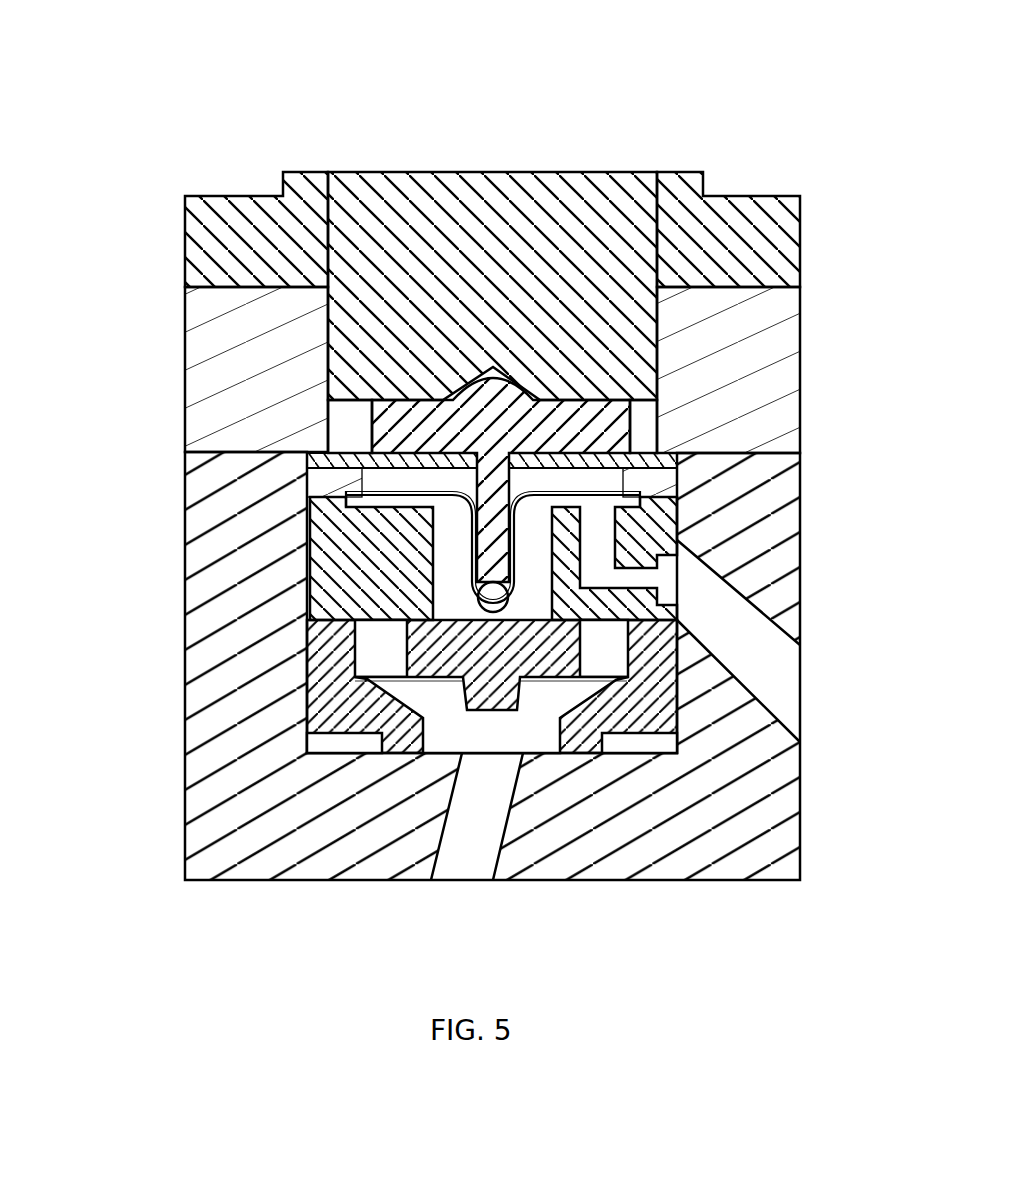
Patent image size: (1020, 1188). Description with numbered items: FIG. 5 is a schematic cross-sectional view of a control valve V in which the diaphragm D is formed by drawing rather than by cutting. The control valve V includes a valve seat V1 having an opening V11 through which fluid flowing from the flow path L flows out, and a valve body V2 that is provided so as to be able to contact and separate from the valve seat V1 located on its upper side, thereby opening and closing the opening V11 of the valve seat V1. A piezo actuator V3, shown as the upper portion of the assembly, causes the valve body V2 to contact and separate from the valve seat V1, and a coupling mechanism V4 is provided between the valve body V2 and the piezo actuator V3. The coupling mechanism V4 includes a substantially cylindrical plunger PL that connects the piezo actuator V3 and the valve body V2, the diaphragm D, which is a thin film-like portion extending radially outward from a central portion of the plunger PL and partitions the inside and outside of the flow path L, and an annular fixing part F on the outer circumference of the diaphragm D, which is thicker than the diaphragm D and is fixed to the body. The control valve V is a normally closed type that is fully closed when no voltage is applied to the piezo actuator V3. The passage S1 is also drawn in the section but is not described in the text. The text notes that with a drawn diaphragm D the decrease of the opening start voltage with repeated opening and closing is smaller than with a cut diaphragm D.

The control valve V is at (715, 112).
The piezo actuator V3 is at (658, 228).
The coupling mechanism V4 is at (358, 518).
The diaphragm D is at (403, 492).
The annular fixing part F is at (330, 485).
The plunger PL is at (470, 555).
The opening V11 is at (525, 613).
The valve body V2 is at (407, 638).
The valve seat V1 is at (548, 677).
The supply passage S1 is at (600, 668).
The flow path L is at (487, 839).